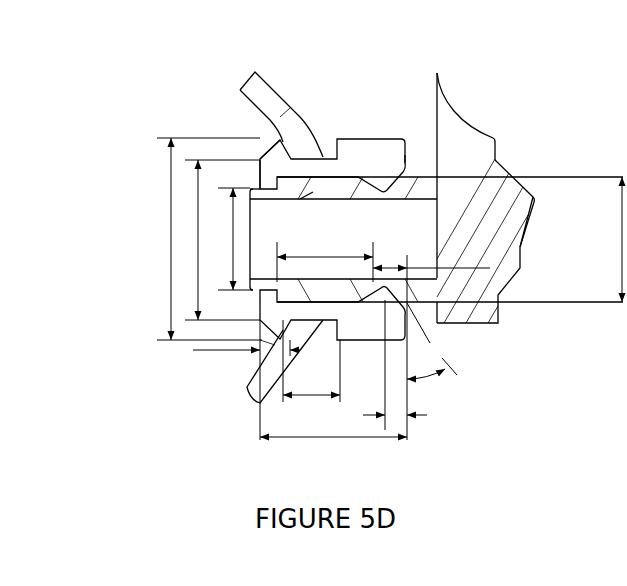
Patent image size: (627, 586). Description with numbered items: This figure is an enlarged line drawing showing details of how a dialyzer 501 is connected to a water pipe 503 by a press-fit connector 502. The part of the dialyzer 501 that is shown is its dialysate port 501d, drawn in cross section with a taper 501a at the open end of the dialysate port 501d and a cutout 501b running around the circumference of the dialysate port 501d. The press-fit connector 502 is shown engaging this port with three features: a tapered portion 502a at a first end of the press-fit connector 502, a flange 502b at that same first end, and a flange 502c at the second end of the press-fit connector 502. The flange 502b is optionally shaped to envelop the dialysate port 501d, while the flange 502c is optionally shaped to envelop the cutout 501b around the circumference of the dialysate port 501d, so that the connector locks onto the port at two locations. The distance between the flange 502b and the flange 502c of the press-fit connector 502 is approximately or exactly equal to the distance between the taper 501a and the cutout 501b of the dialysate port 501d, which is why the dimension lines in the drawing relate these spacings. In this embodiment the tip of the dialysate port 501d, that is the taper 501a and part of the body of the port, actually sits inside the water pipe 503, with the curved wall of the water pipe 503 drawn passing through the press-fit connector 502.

The dialyzer 501 is at (497, 200).
The taper 501a is at (272, 193).
The cutout 501b is at (358, 177).
The dialysate port 501d is at (313, 192).
The press-fit connector 502 is at (388, 166).
The tapered portion 502a is at (262, 150).
The flange 502b is at (262, 170).
The flange 502c is at (402, 172).
The water pipe 503 is at (292, 97).